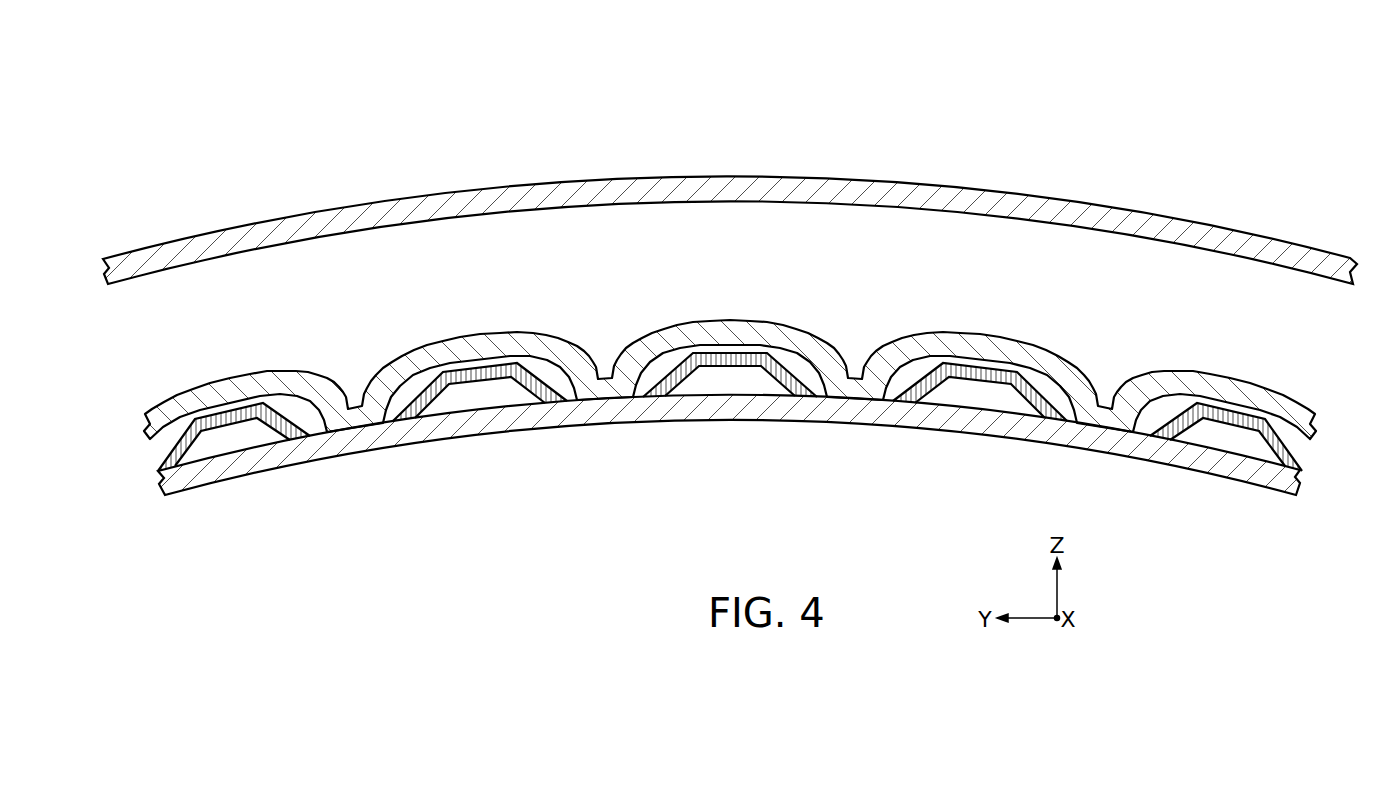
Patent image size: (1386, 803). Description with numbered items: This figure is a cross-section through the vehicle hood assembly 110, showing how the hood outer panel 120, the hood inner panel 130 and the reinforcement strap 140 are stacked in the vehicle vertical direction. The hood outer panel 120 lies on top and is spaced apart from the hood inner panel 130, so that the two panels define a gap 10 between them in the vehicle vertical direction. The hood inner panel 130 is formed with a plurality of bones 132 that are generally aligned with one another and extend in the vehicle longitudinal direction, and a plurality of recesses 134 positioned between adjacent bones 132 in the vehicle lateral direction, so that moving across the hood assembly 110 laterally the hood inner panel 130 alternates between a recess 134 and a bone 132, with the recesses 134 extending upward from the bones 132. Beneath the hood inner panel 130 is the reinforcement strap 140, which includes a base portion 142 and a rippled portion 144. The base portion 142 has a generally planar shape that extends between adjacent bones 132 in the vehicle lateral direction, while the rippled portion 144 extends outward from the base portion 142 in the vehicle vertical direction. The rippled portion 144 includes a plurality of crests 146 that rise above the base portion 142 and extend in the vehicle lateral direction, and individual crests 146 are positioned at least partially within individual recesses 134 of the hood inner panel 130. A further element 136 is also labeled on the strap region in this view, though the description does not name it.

The gap 10 is at (703, 250).
The hood assembly 110 is at (730, 161).
The hood outer panel 120 is at (730, 174).
The hood inner panel 130 is at (730, 330).
The bones 132 is at (725, 338).
The recesses 134 is at (758, 297).
The stiffener cap 136 is at (1171, 457).
The reinforcement strap 140 is at (729, 497).
The base portion 142 is at (729, 467).
The rippled portion 144 is at (205, 488).
The crests 146 is at (262, 418).